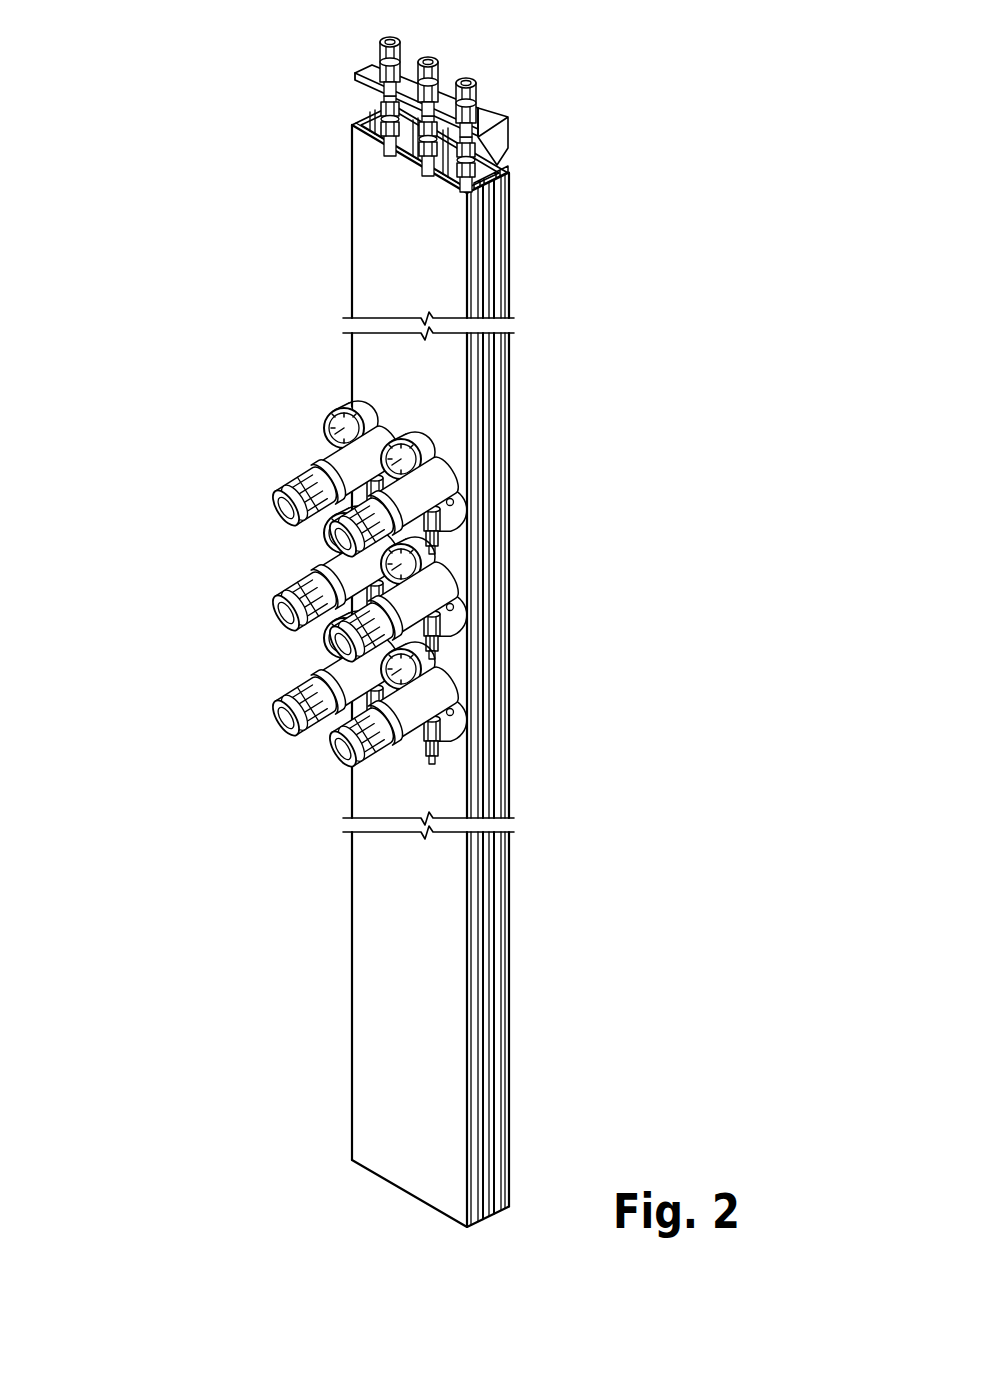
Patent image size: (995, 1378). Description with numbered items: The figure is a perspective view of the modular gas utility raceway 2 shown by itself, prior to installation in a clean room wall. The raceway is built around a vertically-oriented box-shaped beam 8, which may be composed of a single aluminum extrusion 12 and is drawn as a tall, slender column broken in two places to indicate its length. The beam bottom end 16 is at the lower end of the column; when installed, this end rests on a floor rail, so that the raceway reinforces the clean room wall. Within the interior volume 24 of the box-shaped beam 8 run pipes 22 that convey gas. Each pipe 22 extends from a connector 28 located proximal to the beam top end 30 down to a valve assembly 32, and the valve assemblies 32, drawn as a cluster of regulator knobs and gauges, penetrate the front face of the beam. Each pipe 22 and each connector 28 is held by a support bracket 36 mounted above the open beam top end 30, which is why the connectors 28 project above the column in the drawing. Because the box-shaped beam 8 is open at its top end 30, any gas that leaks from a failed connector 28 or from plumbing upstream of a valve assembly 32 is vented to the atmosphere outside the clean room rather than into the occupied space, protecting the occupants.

The modular gas utility raceway 2 is at (148, 273).
The box-shaped beam 8 is at (368, 243).
The aluminum extrusion 12 is at (355, 140).
The beam bottom end 16 is at (366, 1143).
The pipes 22 is at (370, 123).
The interior volume 24 is at (485, 190).
The connector 28 is at (475, 87).
The beam top end 30 is at (504, 178).
The valve assembly 32 is at (280, 710).
The support bracket 36 is at (510, 134).